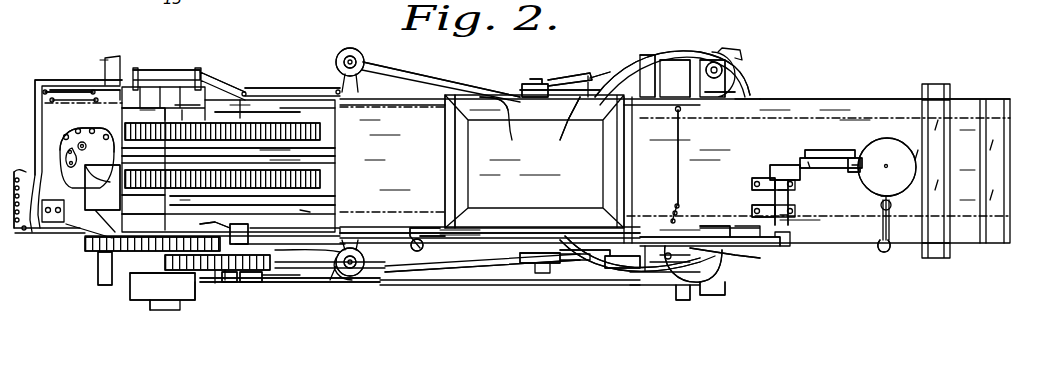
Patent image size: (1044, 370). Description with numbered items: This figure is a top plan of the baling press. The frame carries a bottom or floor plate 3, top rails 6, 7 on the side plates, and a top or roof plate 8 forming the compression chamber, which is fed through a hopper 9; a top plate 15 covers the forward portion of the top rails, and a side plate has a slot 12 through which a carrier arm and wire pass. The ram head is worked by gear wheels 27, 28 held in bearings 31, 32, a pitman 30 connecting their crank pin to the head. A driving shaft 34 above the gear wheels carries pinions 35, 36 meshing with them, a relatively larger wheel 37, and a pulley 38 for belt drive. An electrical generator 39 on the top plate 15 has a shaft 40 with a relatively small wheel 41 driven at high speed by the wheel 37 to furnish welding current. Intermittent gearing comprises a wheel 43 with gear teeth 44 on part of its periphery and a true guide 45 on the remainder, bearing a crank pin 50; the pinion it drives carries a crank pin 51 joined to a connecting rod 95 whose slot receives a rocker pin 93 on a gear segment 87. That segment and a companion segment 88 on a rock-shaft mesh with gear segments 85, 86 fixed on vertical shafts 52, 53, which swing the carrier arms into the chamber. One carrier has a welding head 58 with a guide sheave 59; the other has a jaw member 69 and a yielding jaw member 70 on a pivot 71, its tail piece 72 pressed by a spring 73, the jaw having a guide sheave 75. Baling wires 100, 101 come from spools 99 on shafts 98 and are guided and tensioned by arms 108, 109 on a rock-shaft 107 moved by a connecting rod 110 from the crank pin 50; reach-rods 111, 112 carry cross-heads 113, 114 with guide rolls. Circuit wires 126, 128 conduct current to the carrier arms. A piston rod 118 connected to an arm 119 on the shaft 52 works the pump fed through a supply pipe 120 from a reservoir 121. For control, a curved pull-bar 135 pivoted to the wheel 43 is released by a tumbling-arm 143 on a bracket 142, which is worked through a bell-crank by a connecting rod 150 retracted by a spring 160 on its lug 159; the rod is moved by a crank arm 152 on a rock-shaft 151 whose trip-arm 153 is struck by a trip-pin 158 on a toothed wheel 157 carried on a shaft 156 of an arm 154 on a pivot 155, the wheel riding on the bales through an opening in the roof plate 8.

The top plate 15 is at (62, 86).
The circuit wire 126 is at (168, 70).
The top rail 7 is at (291, 88).
The baling wire 101 is at (415, 82).
The hopper 9 is at (478, 98).
The bottom or floor plate 3 is at (512, 100).
The arm 109 is at (522, 88).
The rock-shaft 107 is at (535, 79).
The reach-rod 112 is at (562, 80).
The jaw member 69 is at (600, 95).
The pivot 71 is at (598, 75).
The spring 73 is at (616, 70).
The tail piece 72 is at (636, 58).
The cross-head 114 is at (692, 60).
The gear segment 88 is at (728, 60).
The gear segment 86 is at (728, 88).
The shaft 53 is at (732, 92).
The top or roof plate 8 is at (790, 106).
The shaft 156 is at (808, 150).
The pivot 155 is at (855, 150).
The reservoir 121 is at (890, 160).
The arm 154 is at (830, 150).
The toothed wheel 157 is at (788, 162).
The circuit wire 128 is at (78, 100).
The pinion 36 is at (160, 122).
The bearing 32 is at (225, 115).
The gear wheel 28 is at (322, 135).
The pitman 30 is at (322, 166).
The gear wheel 27 is at (322, 186).
The pinion 35 is at (143, 201).
The bearing 31 is at (225, 200).
The top rail 6 is at (312, 216).
The bracket 142 is at (198, 228).
The arm 108 is at (246, 228).
The guide 45 is at (272, 262).
The connecting rod 150 is at (395, 246).
The spring 160 is at (412, 236).
The lug 159 is at (412, 250).
The grooved roller or guide sheave 75 is at (562, 104).
The yielding jaw member 70 is at (594, 104).
The grooved roller or guide sheave 59 is at (565, 240).
The head 58 is at (598, 240).
The slot 12 is at (72, 192).
The electrical generator 39 is at (60, 244).
The shaft 40 is at (96, 262).
The relatively small wheel 41 is at (90, 252).
The relatively larger wheel 37 is at (165, 280).
The driving shaft 34 is at (172, 295).
The pulley 38 is at (190, 302).
The tumbling-arm 143 is at (176, 280).
The gear teeth 44 is at (222, 280).
The curved pull-bar 135 is at (210, 280).
The crank pin 51 is at (230, 282).
The crank pin 50 is at (245, 283).
The wheel 43 is at (266, 283).
The connecting rod 110 is at (316, 284).
The shaft 98 is at (346, 278).
The spool 99 is at (360, 280).
The baling wire 100 is at (487, 240).
The connecting rod 95 is at (496, 282).
The reach-rod 111 is at (578, 268).
The cross-head 113 is at (622, 282).
The shaft 52 is at (682, 300).
The rocker pin 93 is at (714, 296).
The gear segment 87 is at (712, 266).
The gear segment 85 is at (722, 258).
The arm 119 is at (748, 258).
The plunger or piston rod 118 is at (758, 250).
The crank arm 152 is at (745, 232).
The trip-arm 153 is at (795, 196).
The rock-shaft 151 is at (785, 220).
The trip-pin 158 is at (838, 190).
The supply pipe 120 is at (888, 250).